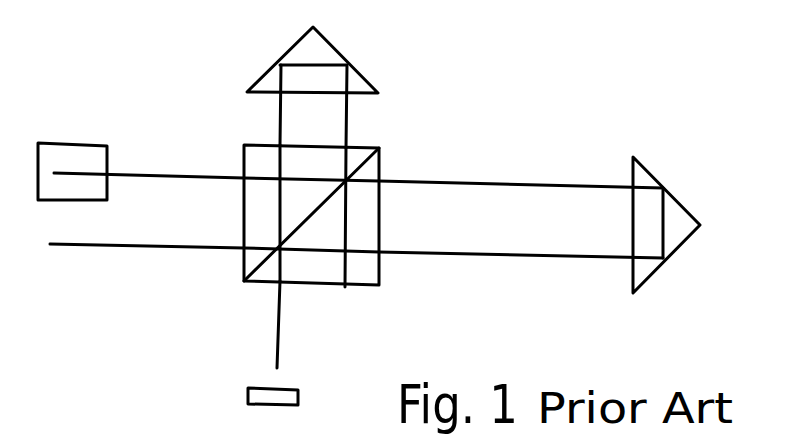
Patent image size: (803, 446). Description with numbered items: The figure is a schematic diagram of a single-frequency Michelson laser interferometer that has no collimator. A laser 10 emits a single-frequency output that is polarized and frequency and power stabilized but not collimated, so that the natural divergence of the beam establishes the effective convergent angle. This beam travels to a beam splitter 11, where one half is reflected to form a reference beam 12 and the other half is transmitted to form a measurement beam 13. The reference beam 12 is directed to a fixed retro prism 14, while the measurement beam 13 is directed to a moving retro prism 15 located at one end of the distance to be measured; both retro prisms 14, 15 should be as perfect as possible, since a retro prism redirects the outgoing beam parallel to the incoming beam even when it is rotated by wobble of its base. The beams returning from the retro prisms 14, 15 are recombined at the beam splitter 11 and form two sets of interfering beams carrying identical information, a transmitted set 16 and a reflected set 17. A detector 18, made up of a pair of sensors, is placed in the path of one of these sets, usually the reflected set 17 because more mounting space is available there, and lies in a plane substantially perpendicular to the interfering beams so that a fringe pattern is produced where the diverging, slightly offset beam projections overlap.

The laser 10 is at (88, 143).
The beam splitter 11 is at (345, 290).
The reference beam 12 is at (347, 125).
The measurement beam 13 is at (499, 256).
The fixed retro prism 14 is at (343, 41).
The moving retro prism 15 is at (683, 202).
The transmitted set of interfering beams 16 is at (155, 245).
The reflected set of interfering beams 17 is at (278, 350).
The detector 18 is at (298, 395).